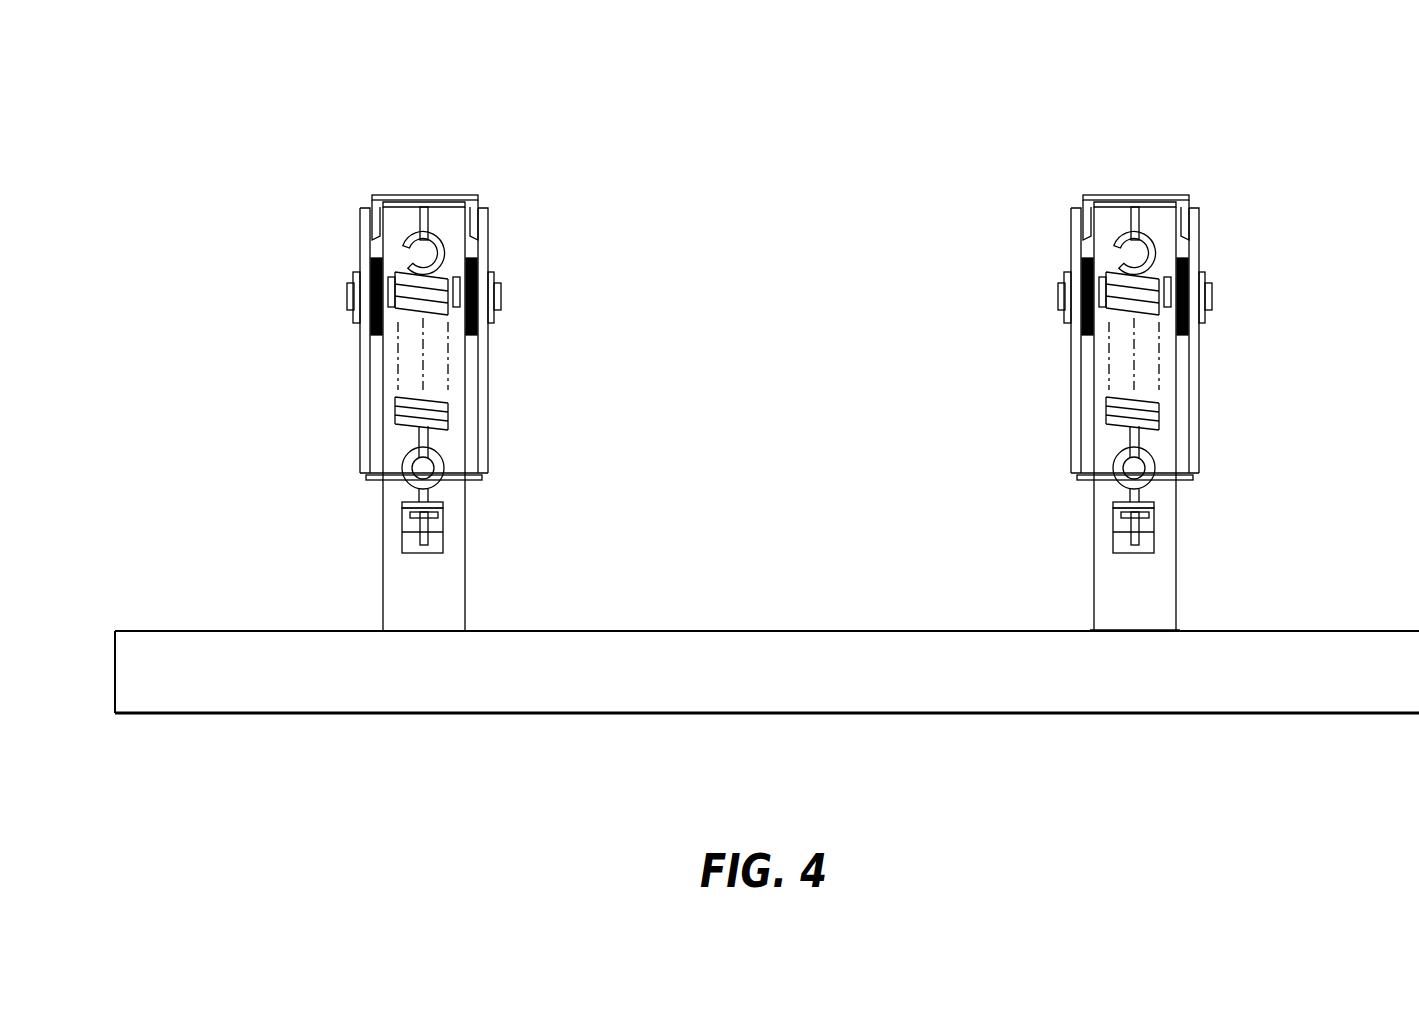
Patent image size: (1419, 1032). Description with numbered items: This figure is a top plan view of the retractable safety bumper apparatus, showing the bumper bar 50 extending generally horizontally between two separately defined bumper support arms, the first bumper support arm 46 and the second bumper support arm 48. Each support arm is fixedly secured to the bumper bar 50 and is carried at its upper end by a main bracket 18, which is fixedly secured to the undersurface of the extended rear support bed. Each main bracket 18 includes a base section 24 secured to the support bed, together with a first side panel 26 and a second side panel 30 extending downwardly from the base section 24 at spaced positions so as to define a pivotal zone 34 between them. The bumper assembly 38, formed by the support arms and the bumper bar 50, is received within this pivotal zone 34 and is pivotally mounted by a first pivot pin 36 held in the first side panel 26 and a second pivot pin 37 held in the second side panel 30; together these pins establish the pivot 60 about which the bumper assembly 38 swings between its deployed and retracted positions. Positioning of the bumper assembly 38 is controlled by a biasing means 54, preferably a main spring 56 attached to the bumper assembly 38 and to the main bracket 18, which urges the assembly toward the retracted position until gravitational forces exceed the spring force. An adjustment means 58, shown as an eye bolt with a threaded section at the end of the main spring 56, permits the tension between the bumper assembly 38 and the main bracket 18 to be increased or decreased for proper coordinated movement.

The main bracket 18 is at (358, 473).
The base section 24 is at (420, 193).
The first side panel 26 is at (363, 368).
The second side panel 30 is at (487, 365).
The pivotal zone 34 is at (382, 413).
The first pivot pin 36 is at (347, 295).
The second pivot pin 37 is at (495, 287).
The bumper assembly 38 is at (1088, 628).
The first bumper support arm 46 is at (407, 607).
The second bumper support arm 48 is at (1122, 607).
The bumper bar 50 is at (922, 680).
The biasing means 54 is at (443, 273).
The main spring 56 is at (448, 410).
The adjustment means 58 is at (446, 467).
The pivot 60 is at (497, 305).